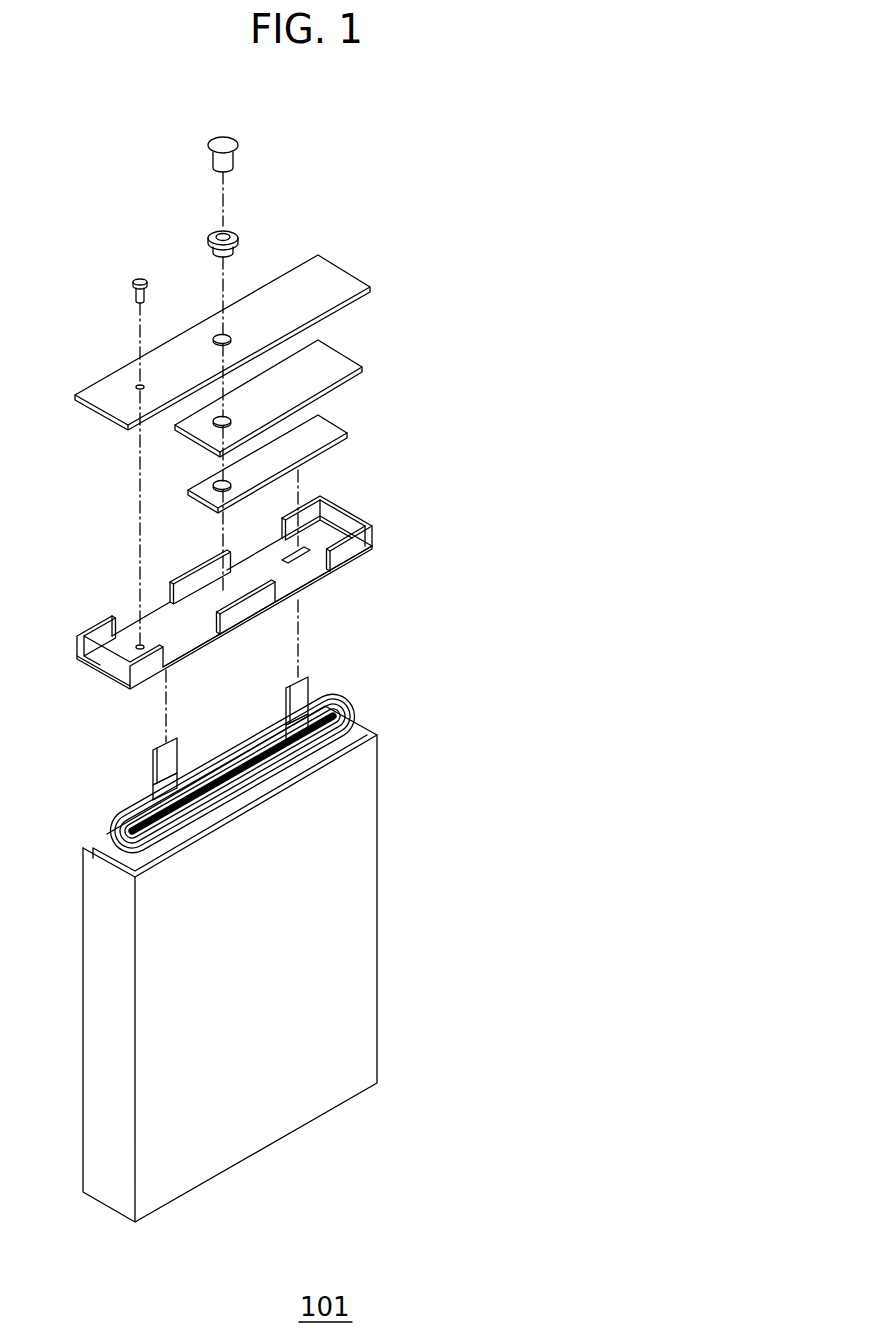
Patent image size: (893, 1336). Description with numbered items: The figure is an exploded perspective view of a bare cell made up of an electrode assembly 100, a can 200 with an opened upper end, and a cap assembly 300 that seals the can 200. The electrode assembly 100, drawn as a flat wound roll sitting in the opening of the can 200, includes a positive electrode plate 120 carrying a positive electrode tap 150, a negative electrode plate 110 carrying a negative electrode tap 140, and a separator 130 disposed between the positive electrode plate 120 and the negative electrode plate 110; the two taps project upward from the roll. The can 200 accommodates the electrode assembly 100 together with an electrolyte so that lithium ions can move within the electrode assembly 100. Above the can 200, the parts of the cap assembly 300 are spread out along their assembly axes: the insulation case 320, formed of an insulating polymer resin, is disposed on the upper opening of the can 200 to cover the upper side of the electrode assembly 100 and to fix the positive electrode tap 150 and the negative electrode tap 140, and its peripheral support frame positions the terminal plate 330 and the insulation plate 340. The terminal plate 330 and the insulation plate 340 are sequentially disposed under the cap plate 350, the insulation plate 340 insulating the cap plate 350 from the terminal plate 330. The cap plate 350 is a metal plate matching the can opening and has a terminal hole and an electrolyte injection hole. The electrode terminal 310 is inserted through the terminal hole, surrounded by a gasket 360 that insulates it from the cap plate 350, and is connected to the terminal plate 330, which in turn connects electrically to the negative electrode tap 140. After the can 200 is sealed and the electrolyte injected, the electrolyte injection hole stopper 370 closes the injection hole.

The electrode assembly 100 is at (443, 645).
The negative electrode plate 110 is at (332, 705).
The positive electrode plate 120 is at (353, 720).
The separator 130 is at (347, 712).
The negative electrode tap 140 is at (290, 700).
The positive electrode tap 150 is at (157, 762).
The can 200 is at (360, 900).
The cap assembly 300 is at (512, 128).
The electrode terminal 310 is at (247, 138).
The insulation case 320 is at (335, 518).
The terminal plate 330 is at (335, 423).
The insulation plate 340 is at (338, 360).
The cap plate 350 is at (335, 277).
The gasket 360 is at (240, 230).
The electrolyte injection hole stopper 370 is at (136, 279).